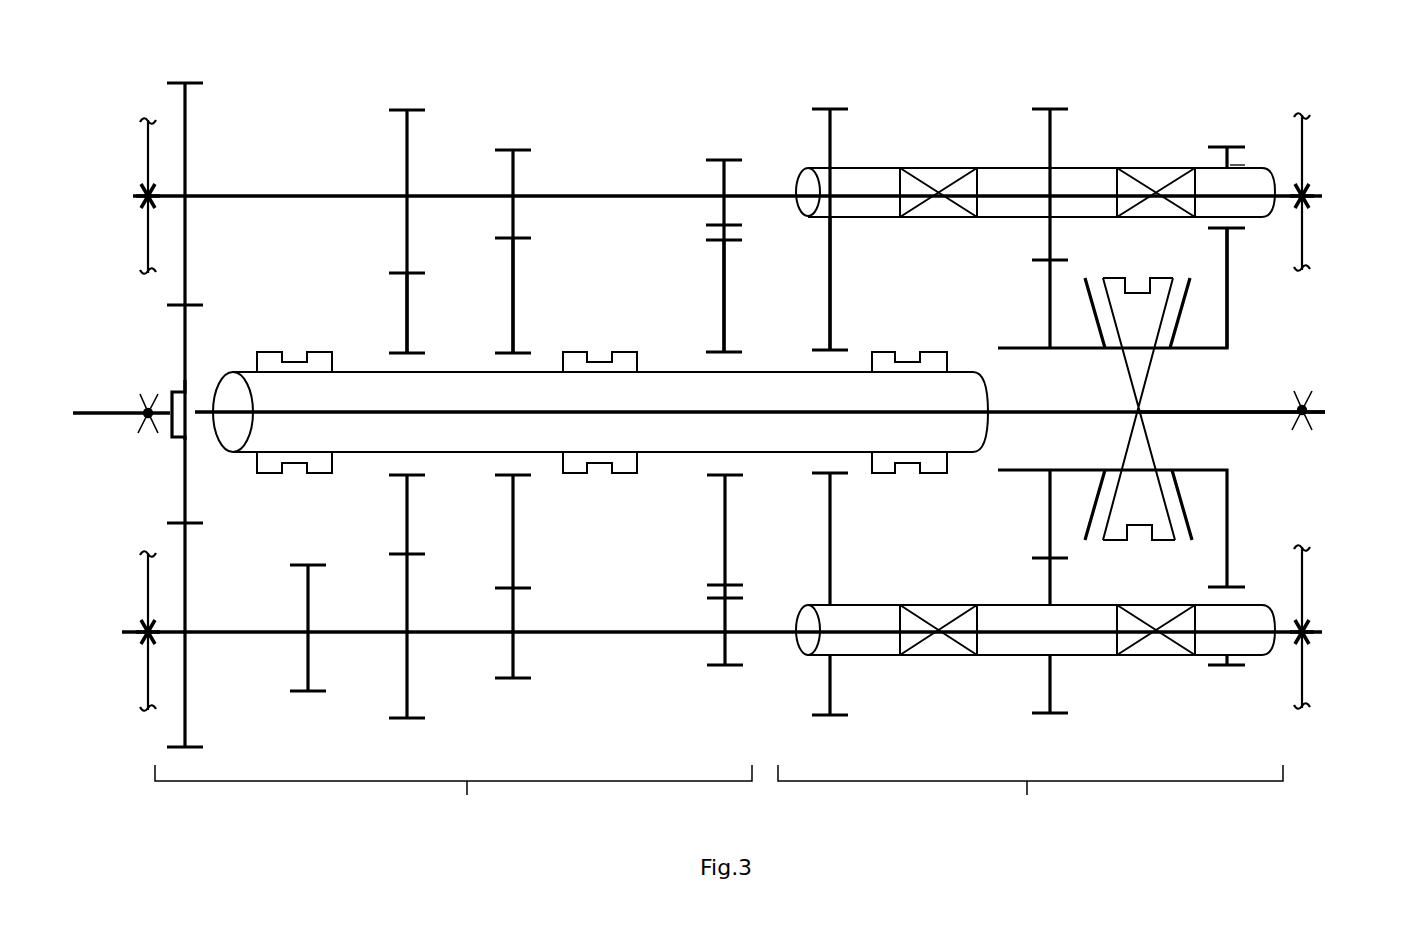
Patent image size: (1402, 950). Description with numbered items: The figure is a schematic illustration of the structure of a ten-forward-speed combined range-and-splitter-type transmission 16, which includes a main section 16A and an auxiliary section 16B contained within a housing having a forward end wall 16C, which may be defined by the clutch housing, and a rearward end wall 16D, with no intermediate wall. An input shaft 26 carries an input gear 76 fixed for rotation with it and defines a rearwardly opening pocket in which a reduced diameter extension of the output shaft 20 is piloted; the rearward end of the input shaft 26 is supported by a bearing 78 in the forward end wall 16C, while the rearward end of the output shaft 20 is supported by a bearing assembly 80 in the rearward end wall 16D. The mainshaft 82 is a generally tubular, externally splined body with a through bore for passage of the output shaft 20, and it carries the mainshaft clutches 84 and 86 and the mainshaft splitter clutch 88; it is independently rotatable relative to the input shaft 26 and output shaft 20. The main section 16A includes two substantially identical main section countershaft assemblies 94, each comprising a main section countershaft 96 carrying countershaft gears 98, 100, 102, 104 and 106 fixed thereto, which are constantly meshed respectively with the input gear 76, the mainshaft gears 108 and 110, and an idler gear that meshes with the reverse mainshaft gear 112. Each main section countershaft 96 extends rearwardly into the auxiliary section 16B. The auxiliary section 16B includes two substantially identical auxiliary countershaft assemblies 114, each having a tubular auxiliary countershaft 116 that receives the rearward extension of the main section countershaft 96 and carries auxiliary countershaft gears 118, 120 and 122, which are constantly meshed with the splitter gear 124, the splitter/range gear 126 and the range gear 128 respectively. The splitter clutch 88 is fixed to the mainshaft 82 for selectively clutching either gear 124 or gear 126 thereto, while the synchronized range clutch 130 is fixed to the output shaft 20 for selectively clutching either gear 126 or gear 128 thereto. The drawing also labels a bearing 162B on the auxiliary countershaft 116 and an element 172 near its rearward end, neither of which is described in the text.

The transmission 16 is at (976, 65).
The main section 16A is at (453, 799).
The auxiliary section 16B is at (1030, 798).
The forward end wall 16C is at (146, 253).
The rearward end wall 16D is at (1306, 148).
The output shaft 20 is at (1260, 408).
The input shaft 26 is at (105, 418).
The input gear 76 is at (184, 355).
The bearing 78 is at (155, 440).
The bearing assembly 80 is at (1303, 430).
The mainshaft 82 is at (461, 355).
The mainshaft clutch 84 is at (295, 357).
The mainshaft clutch 86 is at (601, 355).
The mainshaft splitter clutch 88 is at (903, 355).
The main section countershaft assembly 94 is at (615, 148).
The main section countershaft 96 is at (460, 634).
The countershaft gear 98 is at (188, 157).
The countershaft gear 100 is at (310, 598).
The countershaft gear 102 is at (405, 168).
The countershaft gear 104 is at (512, 172).
The countershaft gear 106 is at (722, 176).
The mainshaft gear 108 is at (409, 306).
The mainshaft gear 110 is at (515, 300).
The reverse mainshaft gear 112 is at (726, 302).
The auxiliary countershaft assembly 114 is at (1170, 97).
The auxiliary countershaft 116 is at (1003, 168).
The auxiliary countershaft gear 118 is at (833, 136).
The auxiliary countershaft gear 120 is at (1052, 142).
The auxiliary countershaft gear 122 is at (1153, 172).
The splitter gear 124 is at (833, 288).
The splitter/range gear 126 is at (146, 645).
The range gear 128 is at (1225, 256).
The synchronized range clutch 130 is at (1142, 460).
The bearing 162B is at (937, 180).
The sleeve end gear 172 is at (1235, 162).